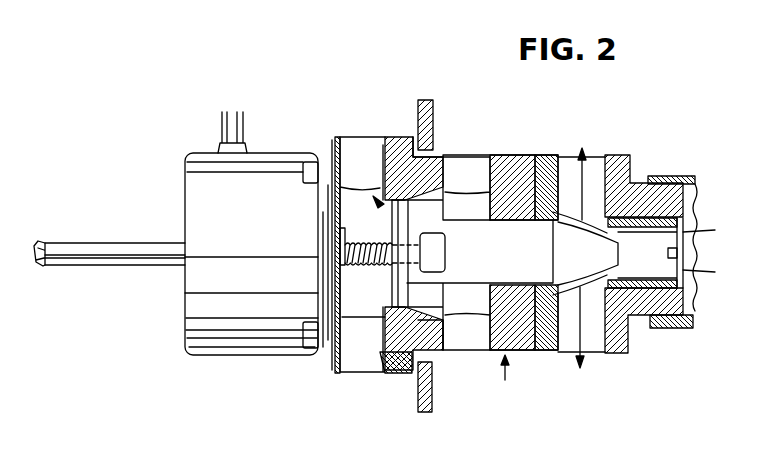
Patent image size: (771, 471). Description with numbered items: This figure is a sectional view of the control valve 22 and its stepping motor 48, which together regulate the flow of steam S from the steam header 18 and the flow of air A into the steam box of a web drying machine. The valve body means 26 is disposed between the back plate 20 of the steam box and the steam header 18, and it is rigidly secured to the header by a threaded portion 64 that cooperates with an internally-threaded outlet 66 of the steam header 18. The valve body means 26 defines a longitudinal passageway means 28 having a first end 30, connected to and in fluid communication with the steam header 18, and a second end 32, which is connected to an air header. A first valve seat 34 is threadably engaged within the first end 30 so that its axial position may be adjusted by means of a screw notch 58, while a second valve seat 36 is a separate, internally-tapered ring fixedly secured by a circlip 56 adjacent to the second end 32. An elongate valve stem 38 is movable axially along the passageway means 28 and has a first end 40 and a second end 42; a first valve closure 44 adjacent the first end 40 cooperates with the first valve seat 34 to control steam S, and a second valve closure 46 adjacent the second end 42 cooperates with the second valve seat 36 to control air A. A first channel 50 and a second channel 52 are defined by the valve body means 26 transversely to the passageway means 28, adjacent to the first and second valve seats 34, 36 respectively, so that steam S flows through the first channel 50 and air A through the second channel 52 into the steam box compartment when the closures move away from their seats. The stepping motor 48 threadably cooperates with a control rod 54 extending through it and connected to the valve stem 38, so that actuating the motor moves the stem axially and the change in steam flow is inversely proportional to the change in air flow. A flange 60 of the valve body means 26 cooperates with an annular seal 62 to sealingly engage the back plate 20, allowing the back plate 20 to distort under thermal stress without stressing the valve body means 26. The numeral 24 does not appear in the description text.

The steam header 18 is at (692, 176).
The back plate 20 is at (437, 75).
The control valve 22 is at (507, 352).
The motor 24 is at (272, 148).
The valve body means 26 is at (488, 155).
The longitudinal passageway means 28 is at (520, 360).
The first end of the passageway means 30 is at (660, 328).
The second end of the passageway means 32 is at (435, 352).
The first valve seat 34 is at (630, 177).
The second valve seat 36 is at (441, 133).
The valve stem 38 is at (483, 352).
The first end of the valve stem 40 is at (560, 297).
The second end of the valve stem 42 is at (410, 373).
The first valve closure 44 is at (538, 155).
The second valve closure 46 is at (368, 270).
The stepping motor 48 is at (236, 342).
The first channel 50 is at (595, 220).
The second channel 52 is at (440, 312).
The control rod 54 is at (318, 348).
The circlip 56 is at (403, 137).
The screw notch 58 is at (677, 254).
The flange 60 is at (386, 318).
The annular seal 62 is at (413, 132).
The threaded portion 64 is at (622, 352).
The internally-threaded outlet 66 is at (682, 178).
The air flow arrow A is at (377, 201).
The steam flow arrow S is at (576, 264).